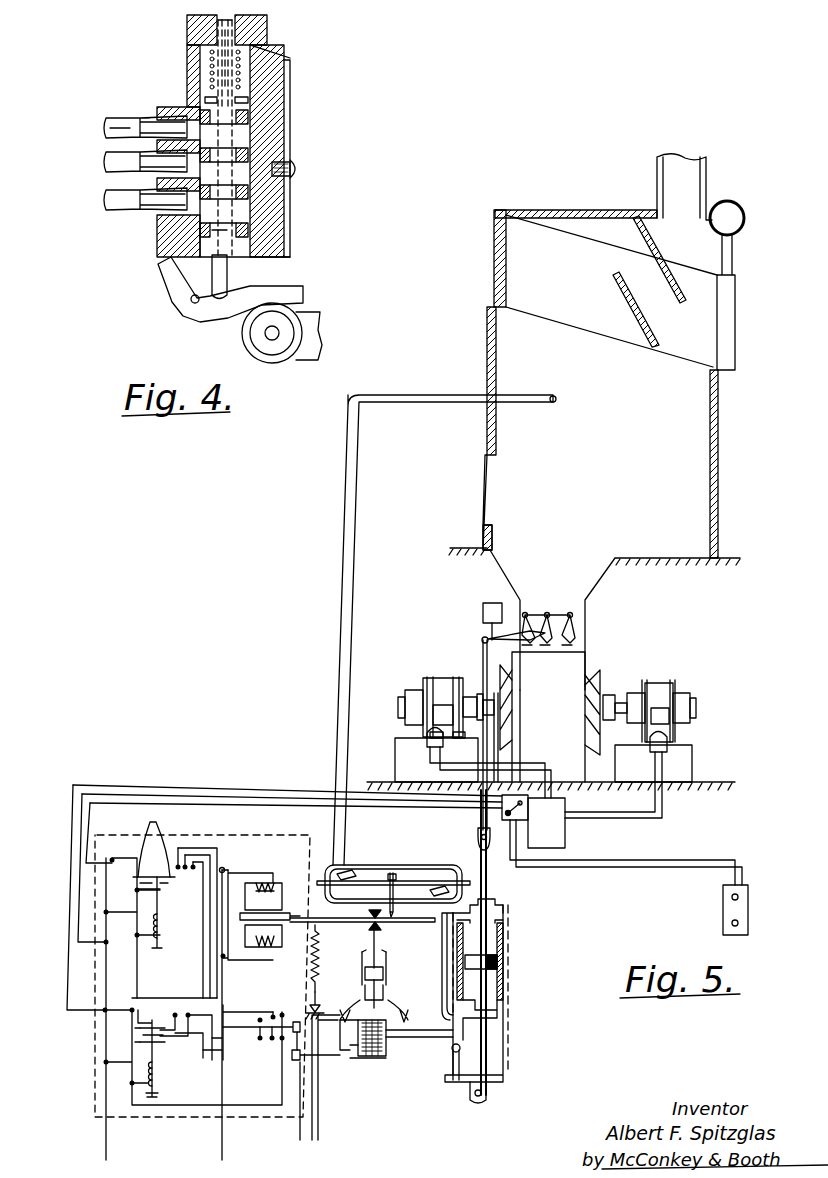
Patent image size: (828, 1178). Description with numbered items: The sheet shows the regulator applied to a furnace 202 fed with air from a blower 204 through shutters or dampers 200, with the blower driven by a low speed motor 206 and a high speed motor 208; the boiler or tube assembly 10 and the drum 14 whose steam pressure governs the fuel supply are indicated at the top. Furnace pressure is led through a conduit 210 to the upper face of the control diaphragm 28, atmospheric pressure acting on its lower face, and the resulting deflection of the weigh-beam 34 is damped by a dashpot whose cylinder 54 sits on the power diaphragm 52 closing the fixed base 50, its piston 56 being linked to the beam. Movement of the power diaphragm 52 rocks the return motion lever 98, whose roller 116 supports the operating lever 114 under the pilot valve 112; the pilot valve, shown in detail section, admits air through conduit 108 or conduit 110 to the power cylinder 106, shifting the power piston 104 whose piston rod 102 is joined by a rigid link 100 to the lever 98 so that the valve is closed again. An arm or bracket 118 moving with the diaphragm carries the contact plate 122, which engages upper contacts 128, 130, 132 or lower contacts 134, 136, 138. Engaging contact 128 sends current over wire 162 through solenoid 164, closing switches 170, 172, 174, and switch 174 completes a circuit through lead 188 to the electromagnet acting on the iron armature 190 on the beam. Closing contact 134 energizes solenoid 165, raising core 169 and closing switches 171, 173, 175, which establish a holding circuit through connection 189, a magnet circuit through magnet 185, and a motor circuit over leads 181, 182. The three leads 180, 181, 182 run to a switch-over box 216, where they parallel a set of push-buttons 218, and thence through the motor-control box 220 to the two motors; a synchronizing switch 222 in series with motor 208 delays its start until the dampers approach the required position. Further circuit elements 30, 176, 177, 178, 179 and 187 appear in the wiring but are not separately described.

In FIG. 5, the boiler or tube assembly 10 is at (545, 230).
In FIG. 5, the drum 14 is at (736, 210).
In FIG. 5, the control diaphragm 28 is at (453, 874).
In FIG. 5, the float 30 is at (370, 882).
In FIG. 5, the weigh-beam 34 is at (340, 914).
In FIG. 5, the fixed base 50 is at (395, 1002).
In FIG. 5, the power diaphragm 52 is at (360, 990).
In FIG. 5, the cylinder 54 is at (360, 962).
In FIG. 5, the piston 56 is at (381, 968).
In FIG. 5, the return motion lever 98 is at (410, 1043).
In FIG. 5, the rigid link 100 is at (452, 1060).
In FIG. 5, the piston rod 102 is at (487, 1060).
In FIG. 5, the power piston 104 is at (498, 962).
In FIG. 5, the power cylinder 106 is at (499, 987).
In FIG. 4, the conduit 108 is at (133, 214).
In FIG. 5, the conduit 108 is at (470, 941).
In FIG. 4, the conduit 110 is at (134, 118).
In FIG. 5, the conduit 110 is at (440, 1022).
In FIG. 5, the pilot valve 112 is at (305, 1135).
In FIG. 4, the operating lever 114 is at (213, 316).
In FIG. 5, the operating lever 114 is at (322, 1060).
In FIG. 4, the roller 116 is at (246, 349).
In FIG. 5, the arm or bracket 118 is at (345, 1062).
In FIG. 4, the contact plate 122 is at (272, 62).
In FIG. 5, the contact plate 122 is at (265, 1030).
In FIG. 5, the contact 128 is at (283, 1013).
In FIG. 5, the contact 130 is at (270, 1010).
In FIG. 5, the contact 132 is at (262, 1024).
In FIG. 5, the contact 134 is at (281, 1041).
In FIG. 5, the contact 136 is at (271, 1041).
In FIG. 5, the contact 138 is at (260, 1041).
In FIG. 5, the wire 162 is at (163, 998).
In FIG. 5, the solenoid 164 is at (175, 925).
In FIG. 5, the solenoid 165 is at (154, 1086).
In FIG. 5, the solenoid core 169 is at (157, 1090).
In FIG. 5, the switch 170 is at (158, 892).
In FIG. 5, the switch 171 is at (140, 1044).
In FIG. 5, the switch 172 is at (153, 834).
In FIG. 5, the switch 173 is at (138, 1030).
In FIG. 5, the switch 174 is at (160, 832).
In FIG. 5, the switch 175 is at (160, 1007).
In FIG. 5, the contact 176 is at (197, 952).
In FIG. 5, the contact 177 is at (208, 1069).
In FIG. 5, the conductor 178 is at (223, 958).
In FIG. 5, the conductor 179 is at (216, 1054).
In FIG. 5, the lead 180 is at (222, 799).
In FIG. 5, the lead 181 is at (196, 782).
In FIG. 5, the lead 182 is at (268, 803).
In FIG. 5, the magnet 185 is at (266, 878).
In FIG. 5, the relay coil 187 is at (277, 900).
In FIG. 5, the lead 188 is at (217, 856).
In FIG. 5, the circuit connection 189 is at (225, 867).
In FIG. 5, the iron armature 190 is at (278, 916).
In FIG. 5, the dampers 200 is at (575, 634).
In FIG. 5, the furnace 202 is at (525, 357).
In FIG. 5, the blower 204 is at (571, 675).
In FIG. 5, the low speed motor 206 is at (440, 683).
In FIG. 5, the high speed motor 208 is at (658, 690).
In FIG. 5, the conduit 210 is at (490, 395).
In FIG. 5, the switch-over box 216 is at (500, 818).
In FIG. 5, the push-buttons 218 is at (748, 903).
In FIG. 5, the motor-control box 220 is at (565, 825).
In FIG. 5, the synchronizing switch 222 is at (483, 612).